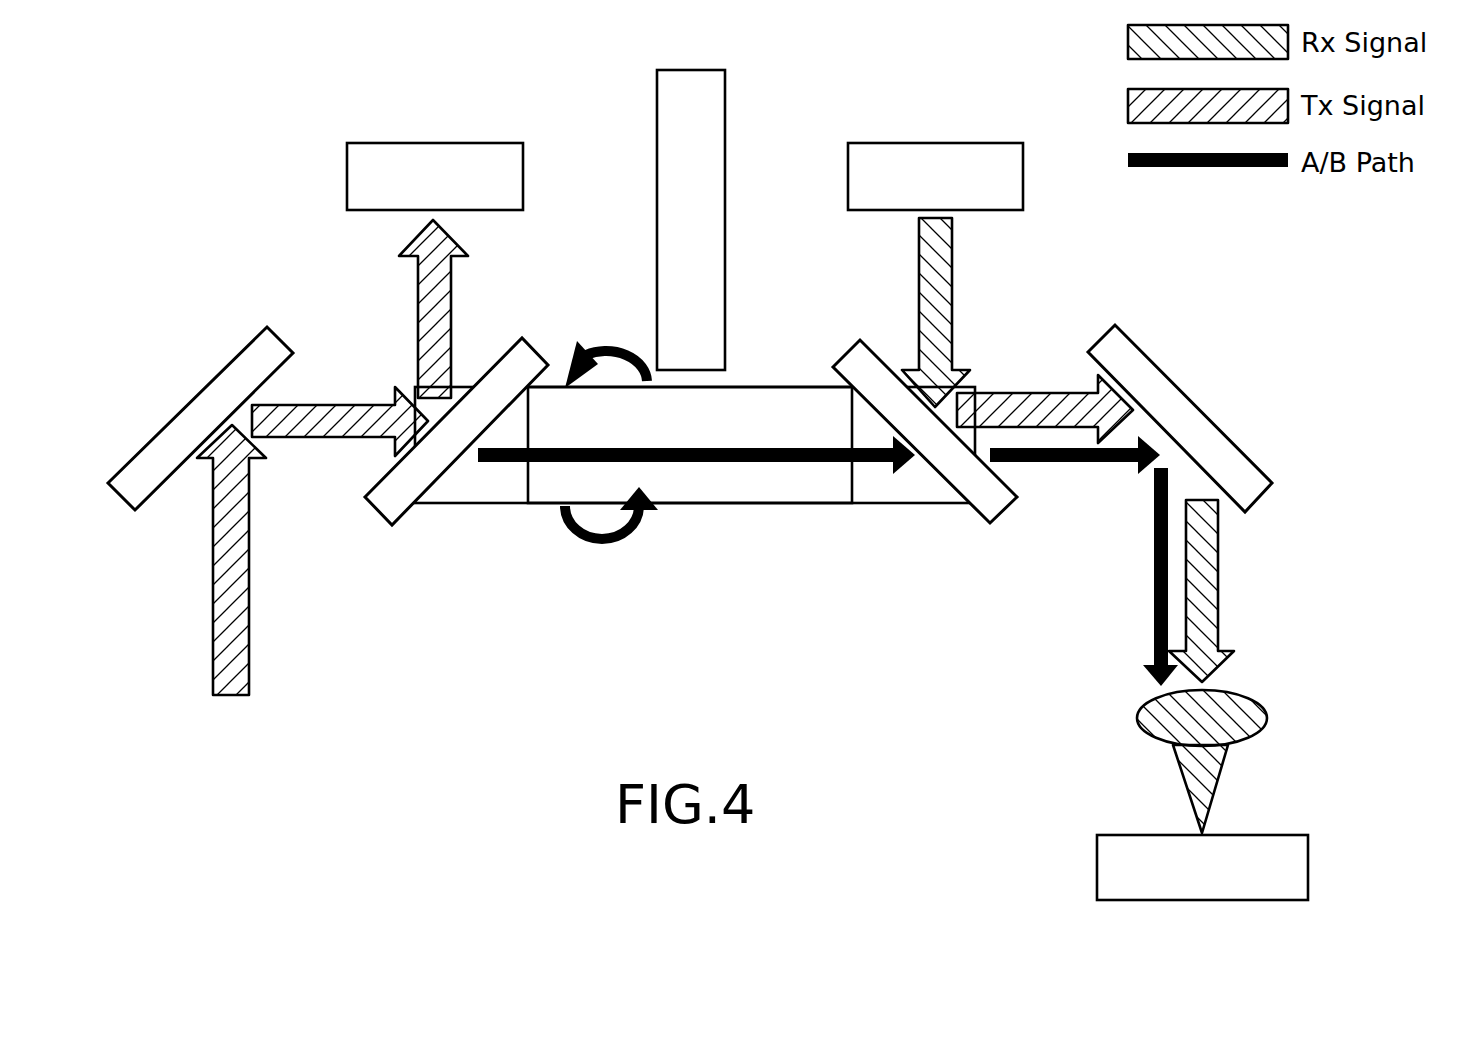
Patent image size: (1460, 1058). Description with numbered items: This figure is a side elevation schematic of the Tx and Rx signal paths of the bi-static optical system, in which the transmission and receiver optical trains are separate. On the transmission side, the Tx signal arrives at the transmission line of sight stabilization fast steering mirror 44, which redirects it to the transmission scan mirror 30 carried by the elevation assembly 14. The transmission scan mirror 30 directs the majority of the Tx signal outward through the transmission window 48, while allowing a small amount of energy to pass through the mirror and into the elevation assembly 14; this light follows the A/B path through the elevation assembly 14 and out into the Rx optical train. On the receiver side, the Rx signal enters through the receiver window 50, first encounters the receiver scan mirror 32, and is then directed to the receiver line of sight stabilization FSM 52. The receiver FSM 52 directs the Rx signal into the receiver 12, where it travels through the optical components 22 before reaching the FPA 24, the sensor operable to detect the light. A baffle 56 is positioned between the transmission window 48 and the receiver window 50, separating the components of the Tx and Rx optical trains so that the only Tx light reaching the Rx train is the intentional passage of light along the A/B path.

The receiver 12 is at (1202, 867).
The sensor 24 is at (1202, 867).
The elevation assembly 14 is at (769, 392).
The camera optics 22 is at (1242, 692).
The transmission scan mirror 30 is at (510, 361).
The receiver scan mirror 32 is at (868, 360).
The transmission line of sight stabilization fast steering mirror 44 is at (197, 405).
The transmission window 48 is at (435, 176).
The receiver window 50 is at (935, 176).
The receiver line of sight stabilization FSM 52 is at (1185, 407).
The baffle 56 is at (691, 220).